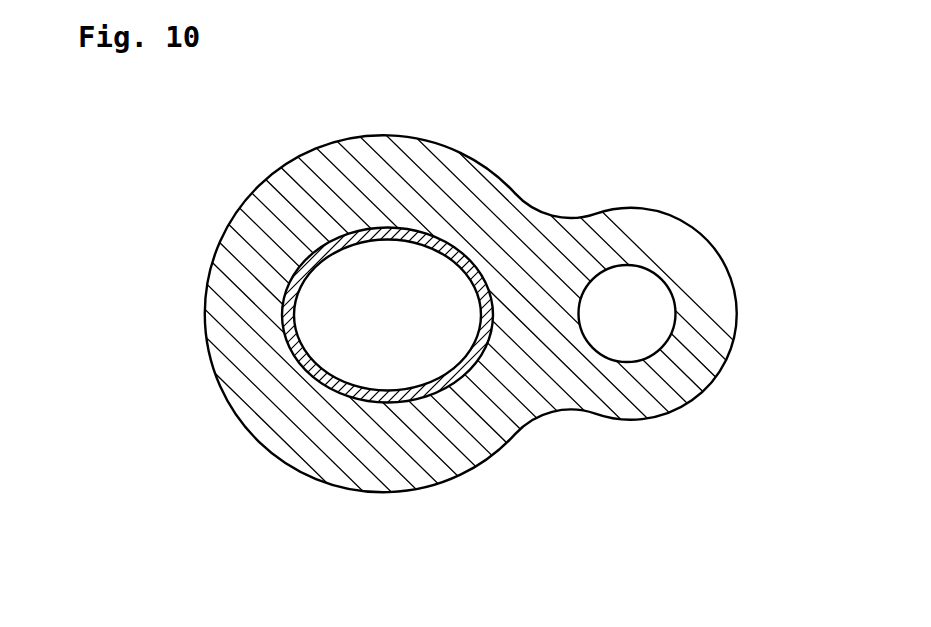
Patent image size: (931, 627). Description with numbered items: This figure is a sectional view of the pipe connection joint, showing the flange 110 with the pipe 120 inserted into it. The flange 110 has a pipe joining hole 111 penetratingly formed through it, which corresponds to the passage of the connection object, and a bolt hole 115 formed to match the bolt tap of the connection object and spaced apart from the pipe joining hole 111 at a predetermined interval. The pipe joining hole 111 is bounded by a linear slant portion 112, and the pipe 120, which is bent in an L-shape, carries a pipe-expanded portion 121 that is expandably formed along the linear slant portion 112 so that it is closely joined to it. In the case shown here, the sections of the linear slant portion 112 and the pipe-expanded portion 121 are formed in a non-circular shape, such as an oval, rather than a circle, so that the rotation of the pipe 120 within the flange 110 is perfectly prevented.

The flange 110 is at (267, 188).
The pipe joining hole 111 is at (382, 324).
The linear slant portion 112 is at (300, 383).
The bolt hole 115 is at (653, 312).
The pipe 120 is at (387, 409).
The pipe-expanded portion 121 is at (363, 403).